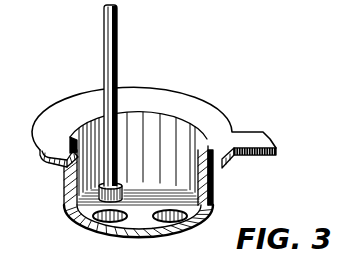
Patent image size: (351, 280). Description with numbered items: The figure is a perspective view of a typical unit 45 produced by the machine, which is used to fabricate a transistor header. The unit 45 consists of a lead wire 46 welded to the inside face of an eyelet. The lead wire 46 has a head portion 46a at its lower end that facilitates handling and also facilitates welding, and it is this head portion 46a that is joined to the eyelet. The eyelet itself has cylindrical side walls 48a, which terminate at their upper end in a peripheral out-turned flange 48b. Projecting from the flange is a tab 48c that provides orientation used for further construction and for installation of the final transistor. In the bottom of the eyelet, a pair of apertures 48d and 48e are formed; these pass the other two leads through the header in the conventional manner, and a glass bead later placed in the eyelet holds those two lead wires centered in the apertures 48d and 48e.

The unit 45 is at (212, 101).
The lead wire 46 is at (119, 45).
The head portion 46a is at (123, 188).
The cylindrical side walls 48a is at (216, 194).
The peripheral out-turned flange 48b is at (45, 163).
The tab 48c is at (266, 143).
The aperture 48d is at (120, 230).
The aperture 48e is at (165, 224).